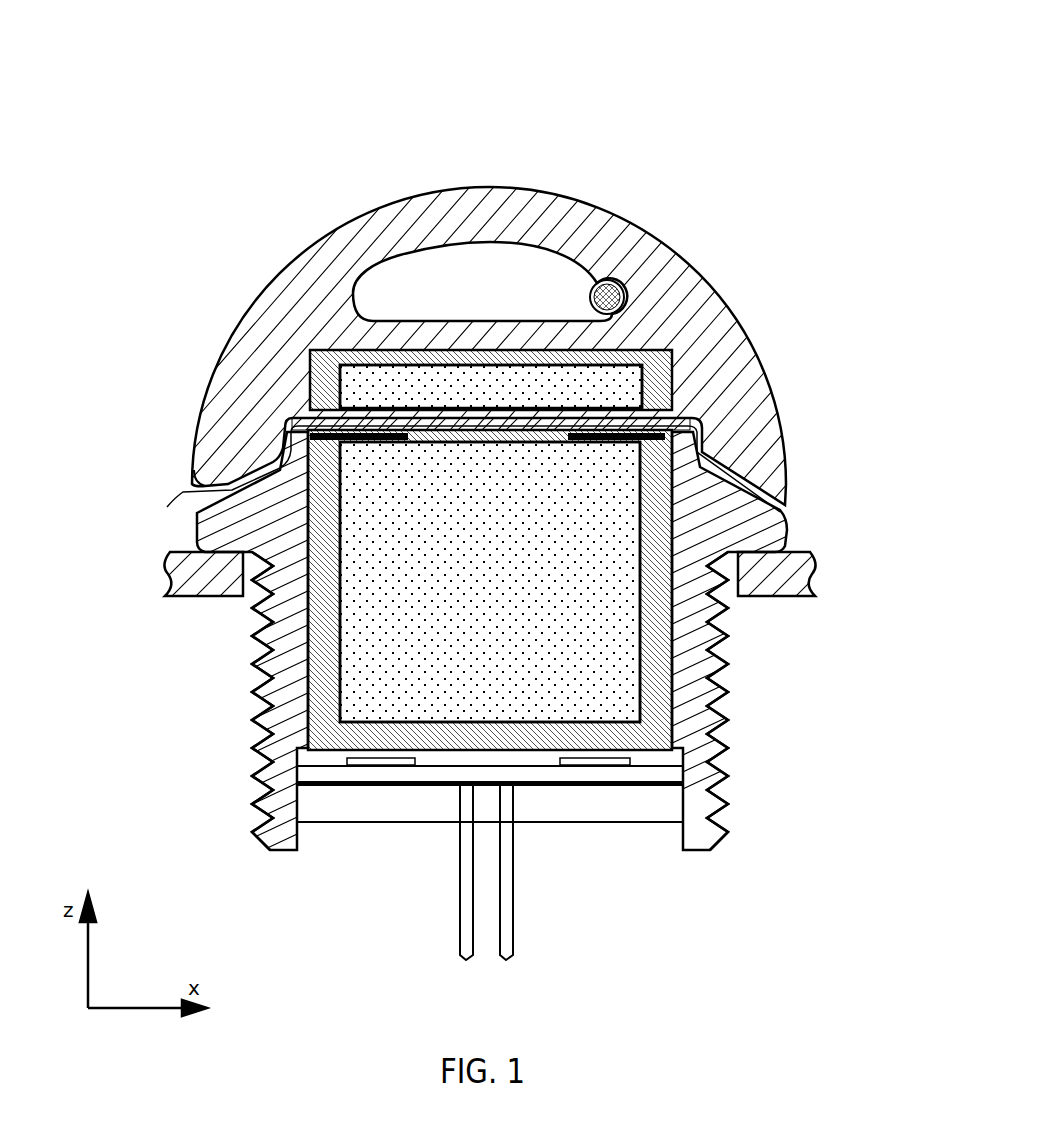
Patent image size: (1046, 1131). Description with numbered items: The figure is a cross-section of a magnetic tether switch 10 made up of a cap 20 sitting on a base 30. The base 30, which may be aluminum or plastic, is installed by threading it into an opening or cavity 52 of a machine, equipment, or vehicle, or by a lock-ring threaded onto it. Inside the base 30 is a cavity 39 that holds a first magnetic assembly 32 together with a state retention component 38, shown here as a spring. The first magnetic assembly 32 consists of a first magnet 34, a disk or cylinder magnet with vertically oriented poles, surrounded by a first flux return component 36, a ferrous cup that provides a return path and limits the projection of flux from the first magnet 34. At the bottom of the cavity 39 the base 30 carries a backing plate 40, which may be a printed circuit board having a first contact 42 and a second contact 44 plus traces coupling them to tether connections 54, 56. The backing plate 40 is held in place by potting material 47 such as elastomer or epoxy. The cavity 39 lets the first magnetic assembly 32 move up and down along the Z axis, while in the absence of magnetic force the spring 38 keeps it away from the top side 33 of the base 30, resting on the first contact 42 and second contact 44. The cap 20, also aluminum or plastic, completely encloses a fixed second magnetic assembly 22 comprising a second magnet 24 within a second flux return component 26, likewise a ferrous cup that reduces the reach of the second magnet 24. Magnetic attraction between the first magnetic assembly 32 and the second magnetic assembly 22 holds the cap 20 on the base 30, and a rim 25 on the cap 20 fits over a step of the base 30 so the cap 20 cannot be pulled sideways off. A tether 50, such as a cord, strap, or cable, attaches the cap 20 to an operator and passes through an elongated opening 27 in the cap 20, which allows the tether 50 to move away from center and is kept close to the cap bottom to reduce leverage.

The magnetic tether switch 10 is at (740, 60).
The cap 20 is at (684, 256).
The second magnetic assembly 22 is at (310, 363).
The second magnet 24 is at (393, 367).
The rim 25 is at (194, 474).
The second flux return component 26 is at (370, 353).
The opening 27 is at (456, 242).
The base 30 is at (784, 507).
The first magnetic assembly 32 is at (687, 770).
The top side 33 is at (610, 392).
The first magnet 34 is at (335, 655).
The first flux return component 36 is at (300, 733).
The state retention component 38 is at (320, 433).
The cavity 39 is at (260, 828).
The backing plate 40 is at (530, 777).
The first contact 42 is at (360, 767).
The second contact 44 is at (595, 767).
The potting material 47 is at (405, 822).
The tether 50 is at (604, 282).
The opening or cavity 52 is at (240, 598).
The tether connection 54 is at (458, 880).
The tether connection 56 is at (513, 893).